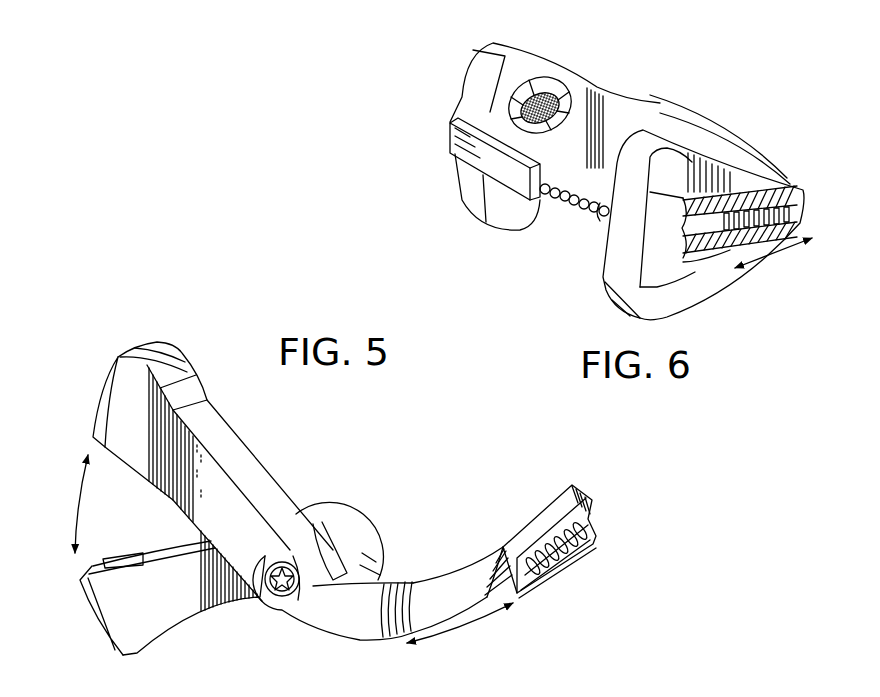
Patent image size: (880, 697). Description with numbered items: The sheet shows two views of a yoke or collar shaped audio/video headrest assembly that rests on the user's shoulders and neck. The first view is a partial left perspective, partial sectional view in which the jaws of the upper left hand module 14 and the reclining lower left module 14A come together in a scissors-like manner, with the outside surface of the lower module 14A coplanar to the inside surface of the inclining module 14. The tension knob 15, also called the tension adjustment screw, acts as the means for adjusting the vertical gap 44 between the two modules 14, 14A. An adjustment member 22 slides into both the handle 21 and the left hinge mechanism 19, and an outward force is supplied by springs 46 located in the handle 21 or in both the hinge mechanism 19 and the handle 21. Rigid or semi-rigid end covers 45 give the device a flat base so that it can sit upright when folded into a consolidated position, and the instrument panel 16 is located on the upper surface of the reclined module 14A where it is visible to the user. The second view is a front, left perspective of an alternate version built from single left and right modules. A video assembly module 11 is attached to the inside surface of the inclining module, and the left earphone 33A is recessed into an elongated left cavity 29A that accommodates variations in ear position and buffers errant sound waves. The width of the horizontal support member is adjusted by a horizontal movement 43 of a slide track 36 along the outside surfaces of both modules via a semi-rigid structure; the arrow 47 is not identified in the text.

In FIG. 6, the video assembly module 11 is at (508, 199).
In FIG. 5, the left hand module 14 is at (217, 411).
In FIG. 5, the reclining lower left module 14A is at (190, 627).
In FIG. 5, the tension knob 15 is at (300, 560).
In FIG. 5, the instrument panel 16 is at (119, 553).
In FIG. 5, the left hinge mechanism 19 is at (362, 572).
In FIG. 5, the handle 21 is at (593, 482).
In FIG. 6, the handle 21 is at (709, 115).
In FIG. 5, the adjustment member 22 is at (454, 571).
In FIG. 6, the left cavity 29A is at (569, 95).
In FIG. 6, the left earphone 33A is at (565, 120).
In FIG. 6, the slide track 36 is at (761, 200).
In FIG. 6, the horizontal movement 43 is at (782, 262).
In FIG. 5, the vertical gap 44 is at (89, 502).
In FIG. 5, the end covers 45 is at (112, 364).
In FIG. 5, the springs 46 is at (590, 556).
In FIG. 5, the swing direction arrow 47 is at (468, 636).